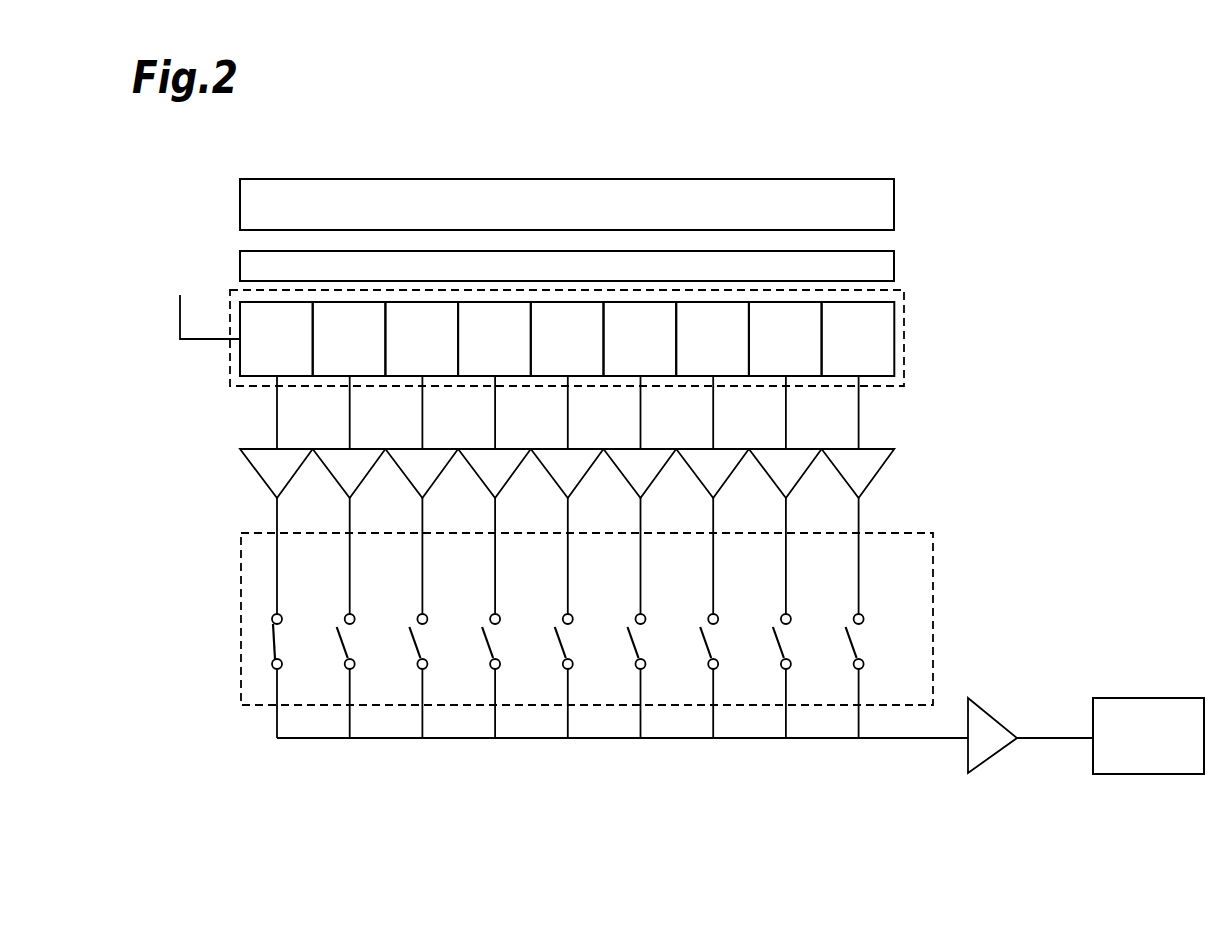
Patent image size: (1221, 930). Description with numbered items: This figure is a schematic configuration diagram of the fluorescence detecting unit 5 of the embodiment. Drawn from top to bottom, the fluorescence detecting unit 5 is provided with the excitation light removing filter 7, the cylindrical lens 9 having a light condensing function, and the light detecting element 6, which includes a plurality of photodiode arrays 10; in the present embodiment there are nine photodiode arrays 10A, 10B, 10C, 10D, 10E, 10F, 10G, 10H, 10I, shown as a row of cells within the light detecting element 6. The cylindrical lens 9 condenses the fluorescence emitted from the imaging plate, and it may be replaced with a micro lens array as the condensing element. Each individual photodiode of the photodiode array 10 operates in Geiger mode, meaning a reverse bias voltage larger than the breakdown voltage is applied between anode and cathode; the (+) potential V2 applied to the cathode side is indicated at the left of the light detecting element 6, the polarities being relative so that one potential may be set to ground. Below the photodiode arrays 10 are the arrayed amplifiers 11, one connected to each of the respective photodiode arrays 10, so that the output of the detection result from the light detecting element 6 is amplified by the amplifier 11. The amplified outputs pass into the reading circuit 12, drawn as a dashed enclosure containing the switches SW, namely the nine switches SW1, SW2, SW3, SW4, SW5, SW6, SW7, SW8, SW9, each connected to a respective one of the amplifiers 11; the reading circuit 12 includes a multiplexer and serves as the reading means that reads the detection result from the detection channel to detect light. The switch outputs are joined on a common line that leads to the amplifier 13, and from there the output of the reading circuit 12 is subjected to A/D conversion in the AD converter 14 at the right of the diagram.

The fluorescence detecting unit 5 is at (636, 90).
The excitation light removing filter 7 is at (894, 198).
The cylindrical lens 9 is at (894, 260).
The light detecting element 6 is at (905, 305).
The photodiode array 10 is at (895, 338).
The photodiode array 10A is at (298, 377).
The photodiode array 10B is at (298, 377).
The photodiode array 10C is at (434, 375).
The photodiode array 10D is at (508, 375).
The photodiode array 10E is at (580, 375).
The photodiode array 10F is at (652, 375).
The photodiode array 10G is at (726, 375).
The photodiode array 10H is at (798, 375).
The photodiode array 10I is at (869, 375).
The arrayed amplifier 11 is at (297, 473).
The reading circuit 12 is at (935, 612).
The switch SW is at (263, 643).
The switch SW1 is at (283, 645).
The switch SW2 is at (375, 656).
The switch SW3 is at (447, 656).
The switch SW4 is at (520, 656).
The switch SW5 is at (593, 656).
The switch SW6 is at (666, 656).
The switch SW7 is at (738, 656).
The switch SW8 is at (811, 656).
The switch SW9 is at (884, 656).
The (+) potential V2 is at (200, 293).
The amplifier 13 is at (990, 713).
The AD converter 14 is at (1170, 698).